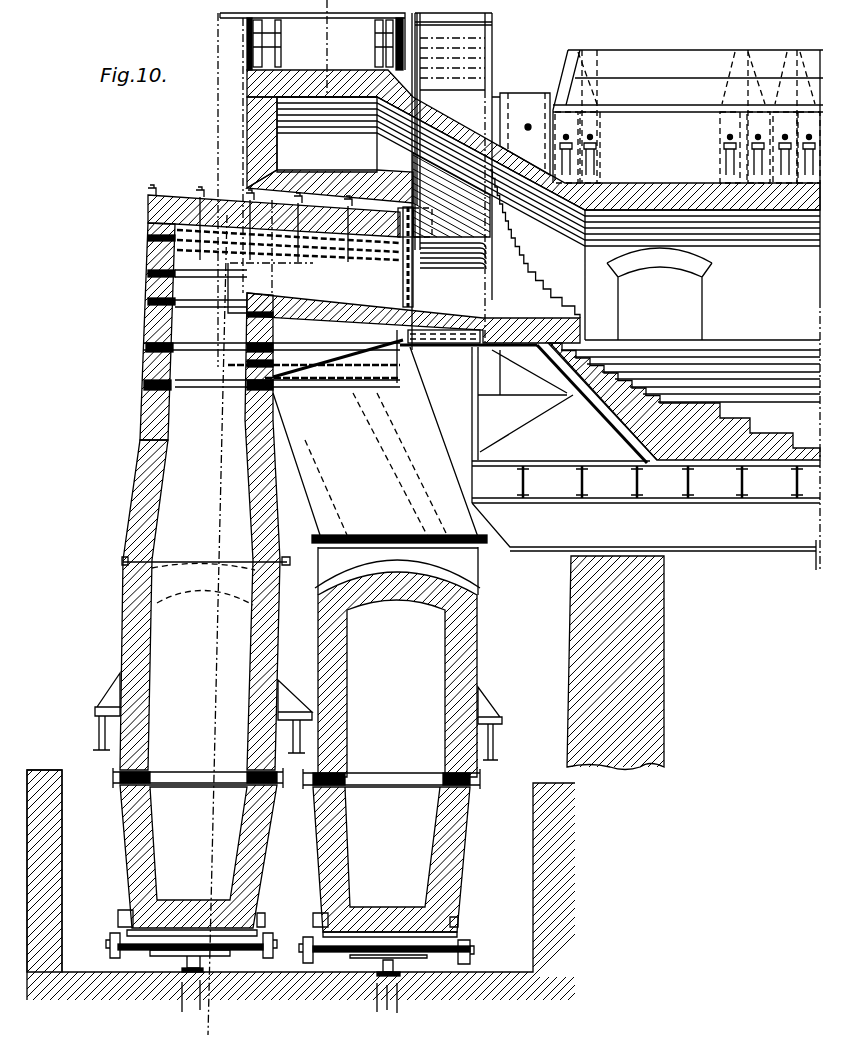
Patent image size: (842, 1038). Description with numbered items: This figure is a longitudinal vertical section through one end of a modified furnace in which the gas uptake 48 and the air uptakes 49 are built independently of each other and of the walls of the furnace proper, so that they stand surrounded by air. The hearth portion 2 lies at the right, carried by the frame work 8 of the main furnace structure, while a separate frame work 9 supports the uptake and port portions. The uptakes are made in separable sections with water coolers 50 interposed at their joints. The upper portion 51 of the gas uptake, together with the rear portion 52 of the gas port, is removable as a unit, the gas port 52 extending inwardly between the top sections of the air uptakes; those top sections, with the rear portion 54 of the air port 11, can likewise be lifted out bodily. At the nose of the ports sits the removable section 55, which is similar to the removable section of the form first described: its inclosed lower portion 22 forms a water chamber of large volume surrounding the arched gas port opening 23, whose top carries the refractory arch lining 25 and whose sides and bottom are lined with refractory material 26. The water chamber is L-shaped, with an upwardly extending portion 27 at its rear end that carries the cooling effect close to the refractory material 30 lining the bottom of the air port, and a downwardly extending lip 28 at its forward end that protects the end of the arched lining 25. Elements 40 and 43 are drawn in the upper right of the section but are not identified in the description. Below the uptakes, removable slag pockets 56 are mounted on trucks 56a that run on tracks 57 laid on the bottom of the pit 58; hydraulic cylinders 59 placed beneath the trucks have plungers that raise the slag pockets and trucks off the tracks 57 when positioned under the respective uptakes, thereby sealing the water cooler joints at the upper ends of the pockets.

The hearth portion 2 is at (646, 410).
The frame work of the main furnace structure 8 is at (663, 61).
The frame work of the uptake and port portions 9 is at (374, 35).
The air port 11 is at (331, 48).
The inclosed lower portion 22 is at (453, 346).
The arched gas port opening 23 is at (473, 287).
The refractory arch lining 25 is at (444, 257).
The refractory material 26 is at (413, 316).
The upwardly extending portion 27 is at (548, 171).
The downwardly extending lip or projection 28 is at (535, 244).
The refractory material 30 is at (444, 195).
The box 40 is at (521, 134).
The hopper support legs 43 is at (670, 112).
The gas uptake 48 is at (202, 625).
The air uptakes 49 is at (387, 562).
The water coolers 50 is at (153, 270).
The upper portion of the gas uptake 51 is at (177, 289).
The rear portion of the gas port 52 is at (271, 286).
The rear portion of the air port 54 is at (533, 140).
The removable section 55 is at (484, 103).
The removable slag pockets 56 is at (295, 858).
The trucks 56a is at (304, 944).
The tracks 57 is at (270, 960).
The pit 58 is at (301, 885).
The hydraulic cylinders 59 is at (292, 1009).